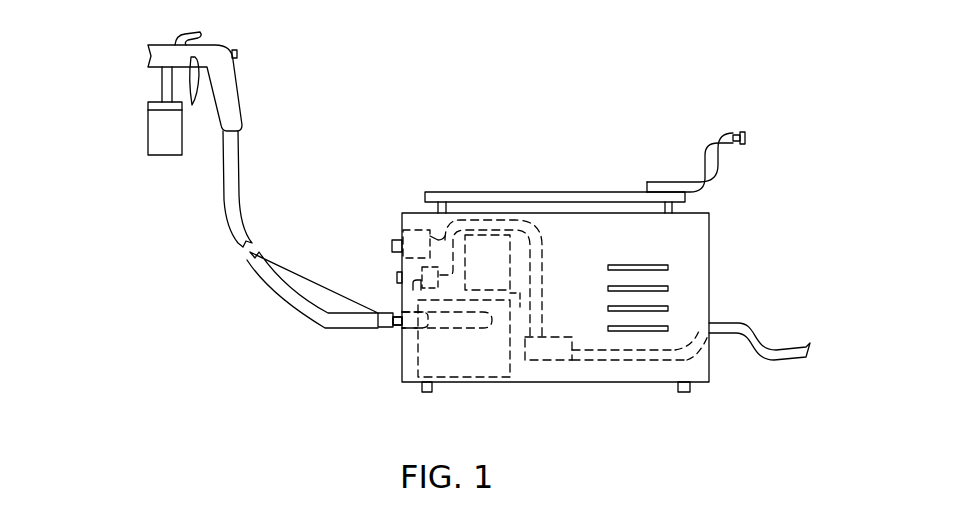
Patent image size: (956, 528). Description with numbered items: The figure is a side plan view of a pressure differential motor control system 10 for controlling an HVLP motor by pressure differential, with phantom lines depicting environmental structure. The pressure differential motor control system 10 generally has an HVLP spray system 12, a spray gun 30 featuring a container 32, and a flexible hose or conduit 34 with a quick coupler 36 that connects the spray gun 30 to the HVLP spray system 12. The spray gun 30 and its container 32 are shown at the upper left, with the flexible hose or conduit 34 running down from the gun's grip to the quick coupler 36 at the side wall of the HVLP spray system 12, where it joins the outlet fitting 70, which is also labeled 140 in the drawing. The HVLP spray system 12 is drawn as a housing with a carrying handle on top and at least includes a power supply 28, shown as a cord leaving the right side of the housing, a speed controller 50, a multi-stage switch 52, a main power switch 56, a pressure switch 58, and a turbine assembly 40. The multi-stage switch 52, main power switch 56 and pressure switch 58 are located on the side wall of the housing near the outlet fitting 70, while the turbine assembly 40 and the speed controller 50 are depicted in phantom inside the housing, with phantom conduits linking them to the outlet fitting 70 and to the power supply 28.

The pressure differential motor control system 10 is at (408, 71).
The HVLP spray system 12 is at (722, 226).
The power supply 28 is at (742, 323).
The spray gun 30 is at (177, 44).
The container 32 is at (148, 125).
The flexible hose or conduit 34 is at (225, 213).
The quick coupler 36 is at (383, 330).
The turbine assembly 40 is at (468, 375).
The speed controller 50 is at (547, 360).
The multi-stage switch 52 is at (396, 240).
The main power switch 56 is at (397, 278).
The pressure switch 58 is at (420, 290).
The outlet fitting 70 is at (398, 335).
The inlet connector 140 is at (398, 335).